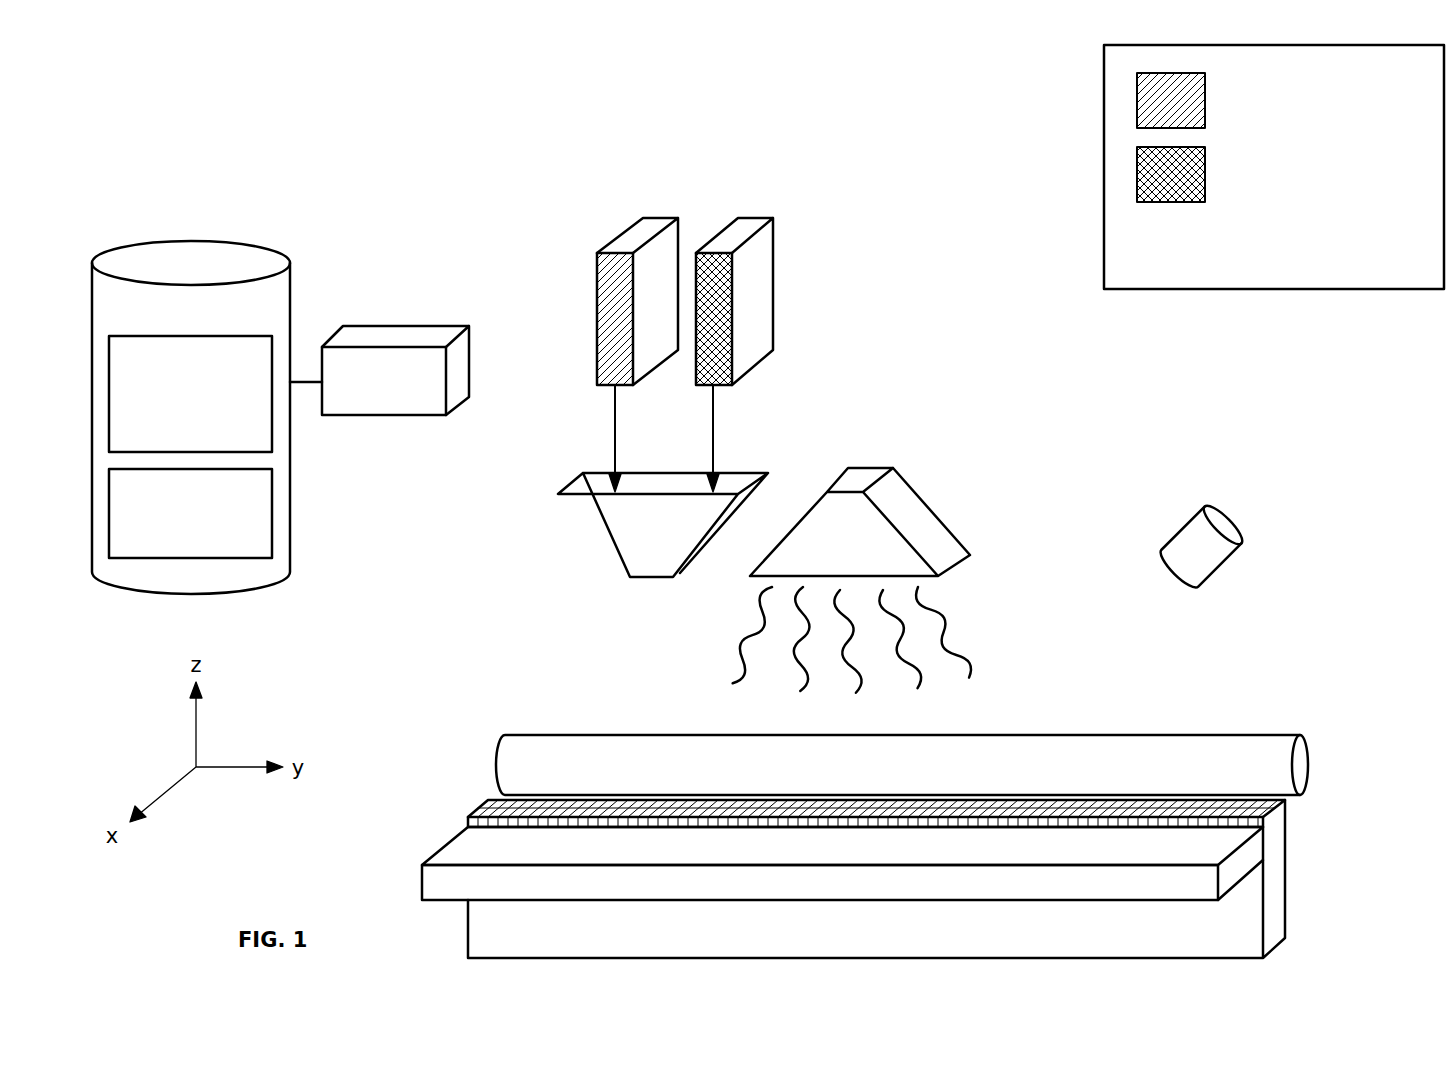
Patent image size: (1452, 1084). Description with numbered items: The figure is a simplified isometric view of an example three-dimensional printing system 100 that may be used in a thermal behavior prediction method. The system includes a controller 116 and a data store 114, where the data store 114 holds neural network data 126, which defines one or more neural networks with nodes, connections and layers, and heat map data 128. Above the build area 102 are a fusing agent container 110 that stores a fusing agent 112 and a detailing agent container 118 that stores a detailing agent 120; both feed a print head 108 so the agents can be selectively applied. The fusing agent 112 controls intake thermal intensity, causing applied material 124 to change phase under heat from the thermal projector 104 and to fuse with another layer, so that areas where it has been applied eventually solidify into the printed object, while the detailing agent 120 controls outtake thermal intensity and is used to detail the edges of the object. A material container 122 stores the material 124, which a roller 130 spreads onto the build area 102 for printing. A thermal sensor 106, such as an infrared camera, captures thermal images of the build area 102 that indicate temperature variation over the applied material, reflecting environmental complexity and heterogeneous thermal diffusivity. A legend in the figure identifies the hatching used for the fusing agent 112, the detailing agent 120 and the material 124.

The 3D-printing system 100 is at (243, 166).
The build area 102 is at (842, 863).
The thermal projector 104 is at (923, 525).
The thermal sensor 106 is at (1228, 528).
The print head 108 is at (597, 543).
The fusing agent container 110 is at (597, 288).
The fusing agent 112 is at (1266, 100).
The data store 114 is at (191, 417).
The controller 116 is at (379, 370).
The detailing agent container 118 is at (760, 290).
The detailing agent 120 is at (1273, 174).
The material container 122 is at (914, 588).
The material 124 is at (931, 522).
The neural network data 126 is at (190, 394).
The heat map data 128 is at (190, 513).
The roller 130 is at (1235, 732).